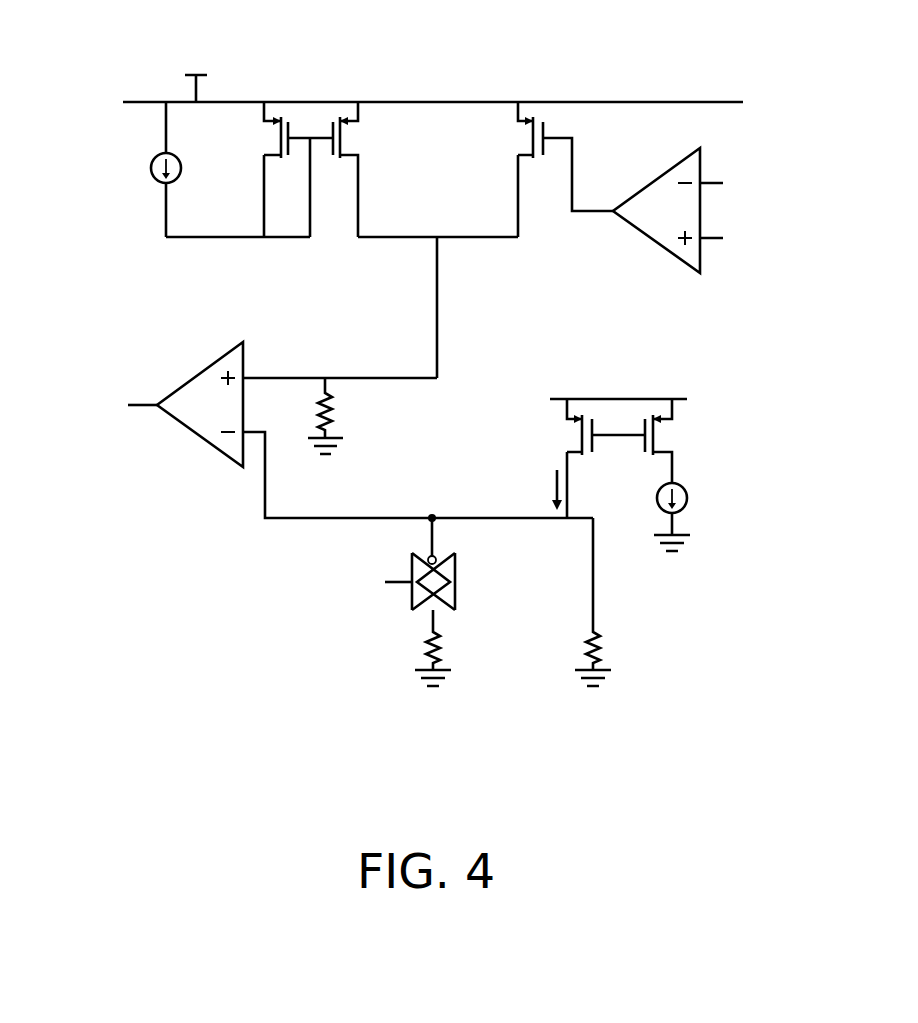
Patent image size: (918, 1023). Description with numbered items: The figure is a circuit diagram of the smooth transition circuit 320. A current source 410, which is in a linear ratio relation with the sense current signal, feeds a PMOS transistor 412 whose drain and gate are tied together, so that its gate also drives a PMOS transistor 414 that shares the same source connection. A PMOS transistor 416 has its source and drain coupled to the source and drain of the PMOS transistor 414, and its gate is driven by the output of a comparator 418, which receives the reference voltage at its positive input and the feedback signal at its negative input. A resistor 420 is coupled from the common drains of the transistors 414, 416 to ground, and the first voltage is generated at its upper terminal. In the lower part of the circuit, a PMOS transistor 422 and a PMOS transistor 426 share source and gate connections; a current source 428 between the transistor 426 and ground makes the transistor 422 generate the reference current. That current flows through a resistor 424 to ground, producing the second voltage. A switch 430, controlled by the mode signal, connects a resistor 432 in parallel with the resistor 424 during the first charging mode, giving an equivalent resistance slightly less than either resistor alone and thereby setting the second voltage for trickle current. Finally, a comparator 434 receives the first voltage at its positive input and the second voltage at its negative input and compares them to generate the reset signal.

The smooth transition circuit 320 is at (432, 414).
The current source 410 is at (149, 168).
The PMOS transistor 412 is at (262, 137).
The PMOS transistor 414 is at (352, 138).
The PMOS transistor 416 is at (517, 138).
The comparator 418 is at (650, 184).
The resistor 420 is at (334, 410).
The PMOS transistor 422 is at (566, 435).
The resistor 424 is at (598, 643).
The PMOS transistor 426 is at (670, 435).
The current source 428 is at (688, 498).
The switch 430 is at (457, 571).
The resistor 432 is at (440, 643).
The comparator 434 is at (195, 374).